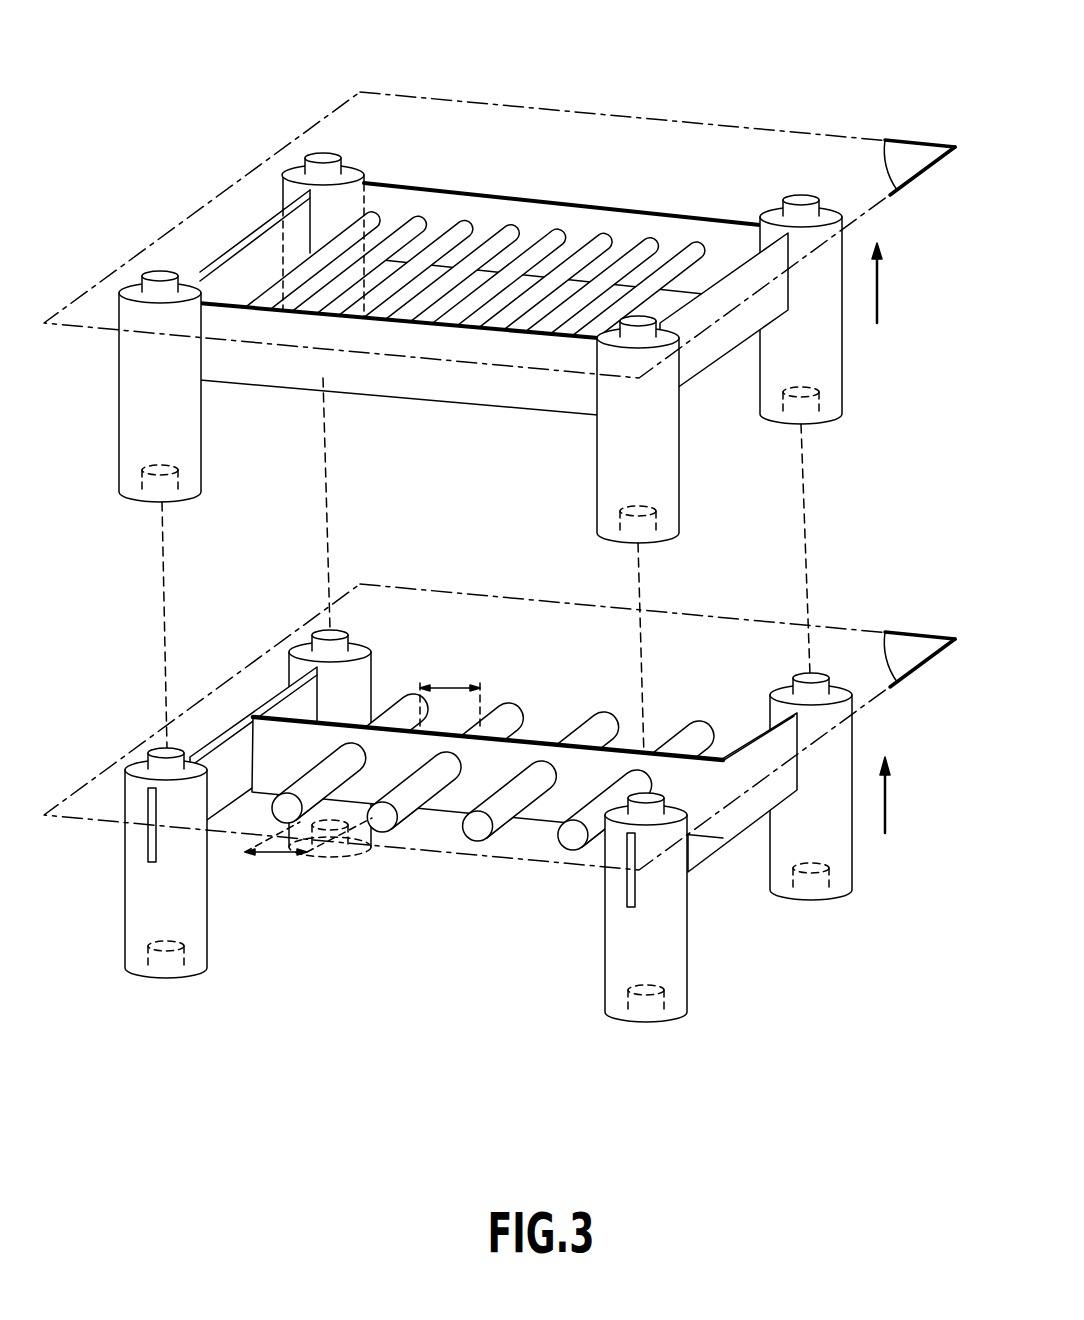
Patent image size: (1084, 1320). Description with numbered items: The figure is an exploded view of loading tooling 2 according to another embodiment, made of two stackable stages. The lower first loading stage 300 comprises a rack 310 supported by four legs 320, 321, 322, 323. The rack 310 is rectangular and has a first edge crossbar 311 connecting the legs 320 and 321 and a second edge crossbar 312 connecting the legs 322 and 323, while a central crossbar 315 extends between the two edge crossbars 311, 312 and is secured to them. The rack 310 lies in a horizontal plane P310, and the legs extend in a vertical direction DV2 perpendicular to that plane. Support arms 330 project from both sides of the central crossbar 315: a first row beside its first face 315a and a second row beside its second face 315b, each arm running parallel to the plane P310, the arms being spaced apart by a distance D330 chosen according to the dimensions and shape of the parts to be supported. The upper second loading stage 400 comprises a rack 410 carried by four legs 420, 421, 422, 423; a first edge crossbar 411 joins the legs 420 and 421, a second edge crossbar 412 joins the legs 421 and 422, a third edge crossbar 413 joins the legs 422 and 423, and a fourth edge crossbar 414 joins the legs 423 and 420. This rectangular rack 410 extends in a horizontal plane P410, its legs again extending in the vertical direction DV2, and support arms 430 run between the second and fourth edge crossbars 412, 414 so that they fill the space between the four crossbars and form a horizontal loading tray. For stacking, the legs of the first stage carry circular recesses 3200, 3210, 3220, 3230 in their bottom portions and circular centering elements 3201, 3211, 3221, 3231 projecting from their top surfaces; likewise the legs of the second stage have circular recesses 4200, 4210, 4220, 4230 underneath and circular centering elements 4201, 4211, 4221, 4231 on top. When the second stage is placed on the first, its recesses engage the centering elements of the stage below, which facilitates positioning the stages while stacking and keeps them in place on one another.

The loading tooling 2 is at (178, 48).
The first loading stage 300 is at (515, 814).
The rack 310 is at (487, 814).
The first edge crossbar 311 is at (270, 693).
The second edge crossbar 312 is at (727, 830).
The central crossbar 315 is at (487, 785).
The first face 315a is at (565, 800).
The second face 315b is at (632, 747).
The leg 320 is at (138, 866).
The leg 321 is at (353, 753).
The leg 322 is at (825, 796).
The leg 323 is at (682, 891).
The circular recess 3200 is at (150, 974).
The circular centering element 3201 is at (160, 752).
The circular recess 3210 is at (352, 856).
The circular centering element 3211 is at (338, 632).
The circular recess 3220 is at (828, 895).
The circular centering element 3221 is at (805, 675).
The circular recess 3230 is at (672, 985).
The circular centering element 3231 is at (650, 800).
The support arm 330 is at (505, 779).
The second loading stage 400 is at (479, 337).
The rack 410 is at (479, 336).
The first edge crossbar 411 is at (232, 243).
The second edge crossbar 412 is at (626, 208).
The third edge crossbar 413 is at (768, 318).
The fourth edge crossbar 414 is at (483, 395).
The leg 420 is at (129, 386).
The leg 421 is at (313, 282).
The leg 422 is at (824, 318).
The leg 423 is at (674, 418).
The circular recess 4200 is at (145, 494).
The circular centering element 4201 is at (156, 275).
The circular recess 4210 is at (345, 372).
The circular centering element 4211 is at (330, 155).
The circular recess 4220 is at (826, 420).
The circular centering element 4221 is at (803, 197).
The circular recess 4230 is at (672, 527).
The circular centering element 4231 is at (657, 326).
The support arm 430 is at (421, 215).
The horizontal plane P410 is at (906, 160).
The horizontal plane P310 is at (906, 652).
The vertical direction DV2 is at (880, 290).
The distance D330 is at (468, 687).